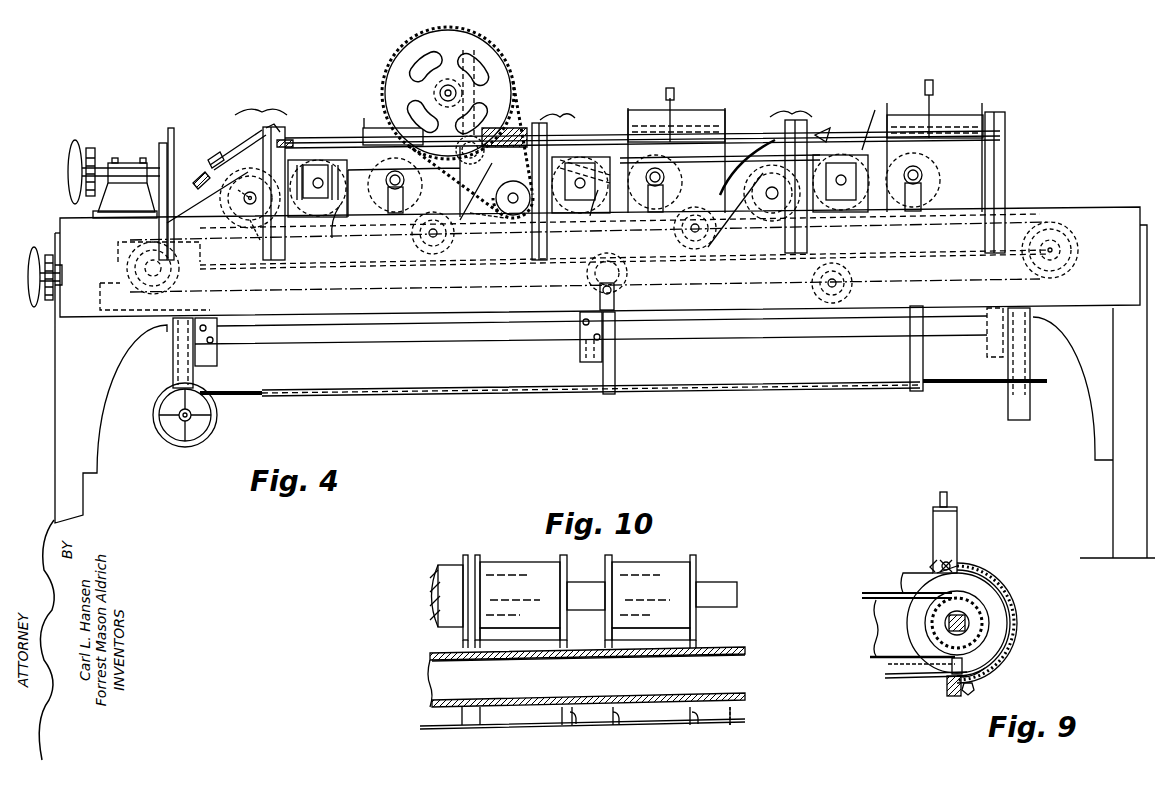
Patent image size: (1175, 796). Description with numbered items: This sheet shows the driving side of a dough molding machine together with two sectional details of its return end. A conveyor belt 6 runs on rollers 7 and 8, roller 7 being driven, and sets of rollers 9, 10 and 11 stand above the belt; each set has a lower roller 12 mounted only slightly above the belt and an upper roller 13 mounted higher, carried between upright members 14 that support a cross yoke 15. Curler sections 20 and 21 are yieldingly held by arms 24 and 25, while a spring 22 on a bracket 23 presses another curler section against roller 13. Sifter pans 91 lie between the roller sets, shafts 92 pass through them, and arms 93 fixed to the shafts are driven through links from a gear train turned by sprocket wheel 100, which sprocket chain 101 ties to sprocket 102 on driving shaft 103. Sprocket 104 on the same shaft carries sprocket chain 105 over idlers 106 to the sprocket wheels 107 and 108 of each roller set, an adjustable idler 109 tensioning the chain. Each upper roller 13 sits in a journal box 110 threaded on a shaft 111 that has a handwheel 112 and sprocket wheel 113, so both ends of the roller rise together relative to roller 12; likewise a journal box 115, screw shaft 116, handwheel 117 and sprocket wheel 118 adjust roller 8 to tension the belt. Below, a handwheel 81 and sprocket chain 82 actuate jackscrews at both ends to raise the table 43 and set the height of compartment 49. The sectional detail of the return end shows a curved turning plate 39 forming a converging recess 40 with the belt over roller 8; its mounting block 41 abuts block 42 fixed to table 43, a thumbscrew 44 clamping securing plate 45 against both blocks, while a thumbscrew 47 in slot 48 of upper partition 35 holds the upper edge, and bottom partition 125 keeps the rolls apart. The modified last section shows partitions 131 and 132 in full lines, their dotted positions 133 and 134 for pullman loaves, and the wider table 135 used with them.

In FIG. 4, the conveyor belt 6 is at (878, 283).
In FIG. 10, the conveyor belt 6 is at (726, 647).
In FIG. 9, the conveyor belt 6 is at (907, 625).
In FIG. 4, the roller 7 is at (1078, 251).
In FIG. 4, the roller 8 is at (152, 248).
In FIG. 9, the roller 8 is at (925, 629).
In FIG. 4, the set of rollers 9 is at (791, 104).
In FIG. 4, the set of rollers 10 is at (557, 107).
In FIG. 4, the set of rollers 11 is at (261, 101).
In FIG. 4, the roller 12 is at (234, 193).
In FIG. 4, the roller 13 is at (325, 165).
In FIG. 10, the roller 13 is at (583, 601).
In FIG. 4, the upright members 14 is at (286, 249).
In FIG. 9, the cross yoke 15 is at (948, 497).
In FIG. 4, the curler section 20 is at (233, 157).
In FIG. 4, the curler section 21 is at (205, 194).
In FIG. 4, the spring 22 is at (575, 155).
In FIG. 4, the bracket 23 is at (550, 131).
In FIG. 4, the arm 24 is at (244, 150).
In FIG. 4, the arm 25 is at (206, 168).
In FIG. 9, the upper partition 35 is at (957, 530).
In FIG. 9, the curved turning plate 39 is at (1010, 631).
In FIG. 9, the converging recess 40 is at (1002, 610).
In FIG. 9, the mounting block 41 is at (967, 663).
In FIG. 9, the block 42 is at (952, 698).
In FIG. 9, the table 43 is at (925, 681).
In FIG. 9, the thumbscrew 44 is at (976, 690).
In FIG. 9, the securing plate 45 is at (987, 666).
In FIG. 9, the thumbscrew 47 is at (955, 565).
In FIG. 9, the slot 48 is at (930, 565).
In FIG. 10, the compartment 49 is at (524, 712).
In FIG. 4, the handwheel 81 is at (217, 422).
In FIG. 4, the sprocket chain 82 is at (238, 392).
In FIG. 4, the sifter pans 91 is at (390, 126).
In FIG. 4, the shafts 92 is at (752, 128).
In FIG. 4, the arms 93 is at (662, 100).
In FIG. 4, the sprocket wheel 100 is at (386, 98).
In FIG. 4, the sprocket chain 101 is at (514, 88).
In FIG. 4, the sprocket 102 is at (508, 218).
In FIG. 4, the driving shaft 103 is at (484, 221).
In FIG. 4, the sprocket 104 is at (491, 146).
In FIG. 4, the sprocket chain 105 is at (935, 262).
In FIG. 4, the idlers 106 is at (415, 244).
In FIG. 4, the sprocket wheel 107 is at (250, 228).
In FIG. 4, the sprocket wheel 108 is at (317, 160).
In FIG. 4, the adjustable idler 109 is at (618, 271).
In FIG. 4, the journal box 110 is at (609, 172).
In FIG. 4, the shaft 111 is at (183, 140).
In FIG. 4, the handwheel 112 is at (70, 152).
In FIG. 4, the sprocket wheel 113 is at (97, 147).
In FIG. 4, the journal box 115 is at (118, 252).
In FIG. 4, the screw shaft 116 is at (84, 277).
In FIG. 4, the handwheel 117 is at (38, 248).
In FIG. 4, the sprocket wheel 118 is at (45, 302).
In FIG. 9, the bottom partition 125 is at (921, 664).
In FIG. 10, the partition 131 is at (700, 720).
In FIG. 10, the partition 132 is at (622, 720).
In FIG. 10, the dotted-line partition position 133 is at (740, 707).
In FIG. 10, the dotted-line partition position 134 is at (578, 722).
In FIG. 10, the table 135 is at (728, 724).